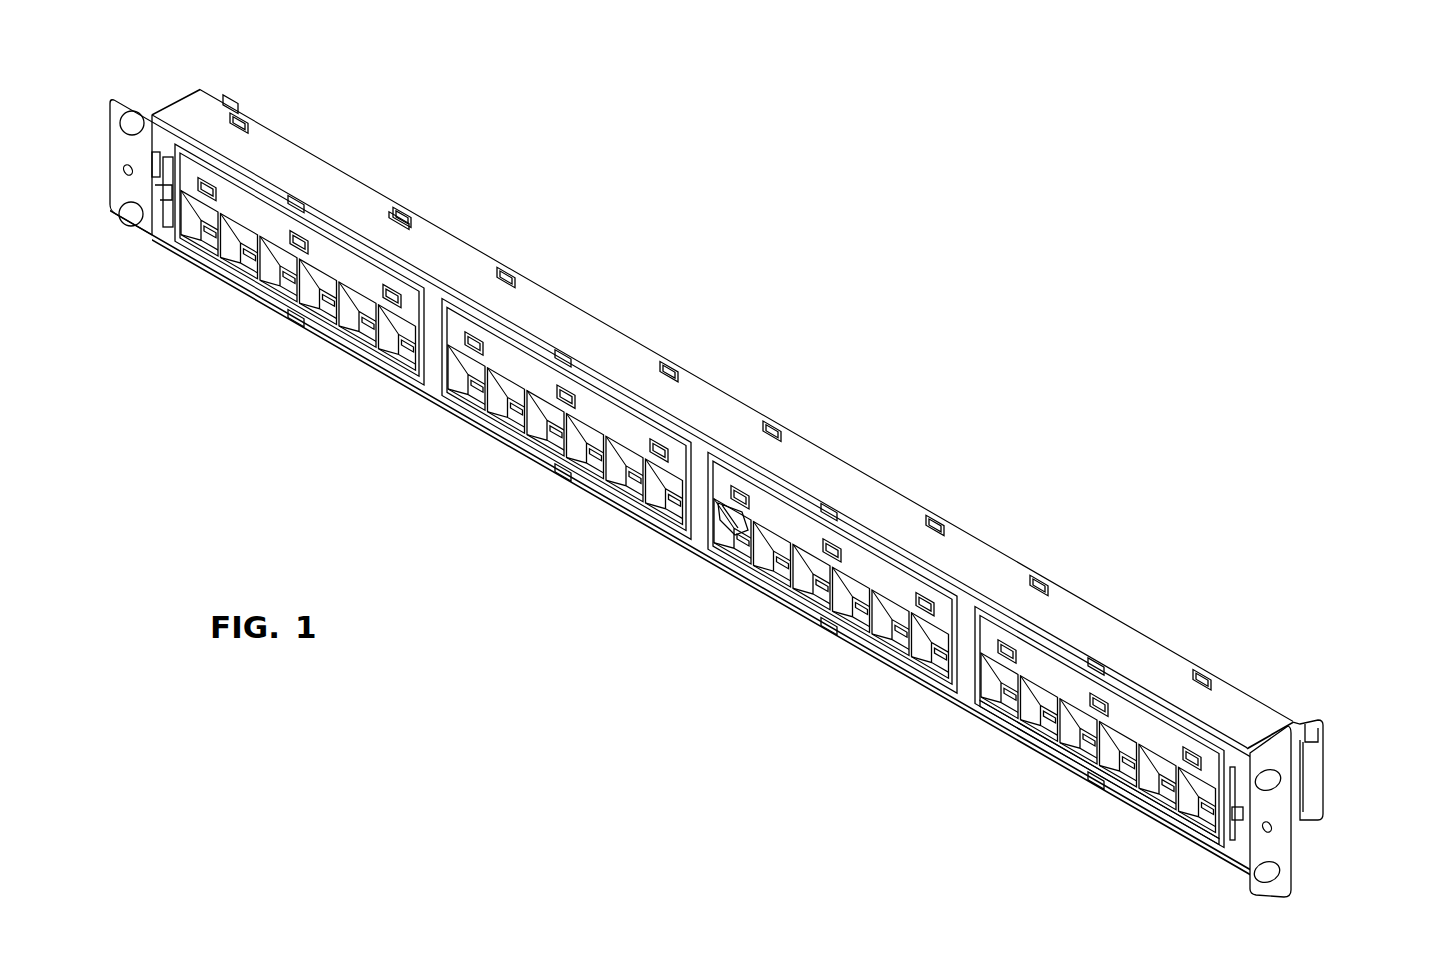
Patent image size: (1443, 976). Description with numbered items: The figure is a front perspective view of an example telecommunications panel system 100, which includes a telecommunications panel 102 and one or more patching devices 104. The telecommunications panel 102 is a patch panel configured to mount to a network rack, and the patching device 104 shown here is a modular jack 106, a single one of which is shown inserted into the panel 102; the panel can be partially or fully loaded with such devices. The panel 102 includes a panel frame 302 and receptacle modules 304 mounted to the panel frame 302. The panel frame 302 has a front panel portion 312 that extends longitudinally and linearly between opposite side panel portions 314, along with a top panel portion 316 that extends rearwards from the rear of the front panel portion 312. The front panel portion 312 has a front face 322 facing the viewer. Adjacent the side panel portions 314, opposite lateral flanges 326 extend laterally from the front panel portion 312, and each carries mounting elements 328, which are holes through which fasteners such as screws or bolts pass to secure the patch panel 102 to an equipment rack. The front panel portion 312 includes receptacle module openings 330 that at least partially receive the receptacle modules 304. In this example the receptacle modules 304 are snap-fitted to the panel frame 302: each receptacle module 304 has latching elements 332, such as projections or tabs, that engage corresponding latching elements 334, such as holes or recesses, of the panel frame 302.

The telecommunications panel system 100 is at (1195, 206).
The telecommunications panel 102 is at (652, 318).
The patching device 104 is at (653, 644).
The modular jack 106 is at (725, 502).
The panel frame 302 is at (830, 475).
The receptacle module 304 is at (907, 588).
The front panel portion 312 is at (967, 700).
The side panel portion 314 is at (1297, 740).
The top panel portion 316 is at (898, 515).
The front face 322 is at (963, 663).
The lateral flange 326 is at (113, 163).
The mounting element 328 is at (131, 121).
The receptacle module opening 330 is at (1045, 743).
The latching element 332 is at (398, 212).
The latching element 334 is at (391, 210).